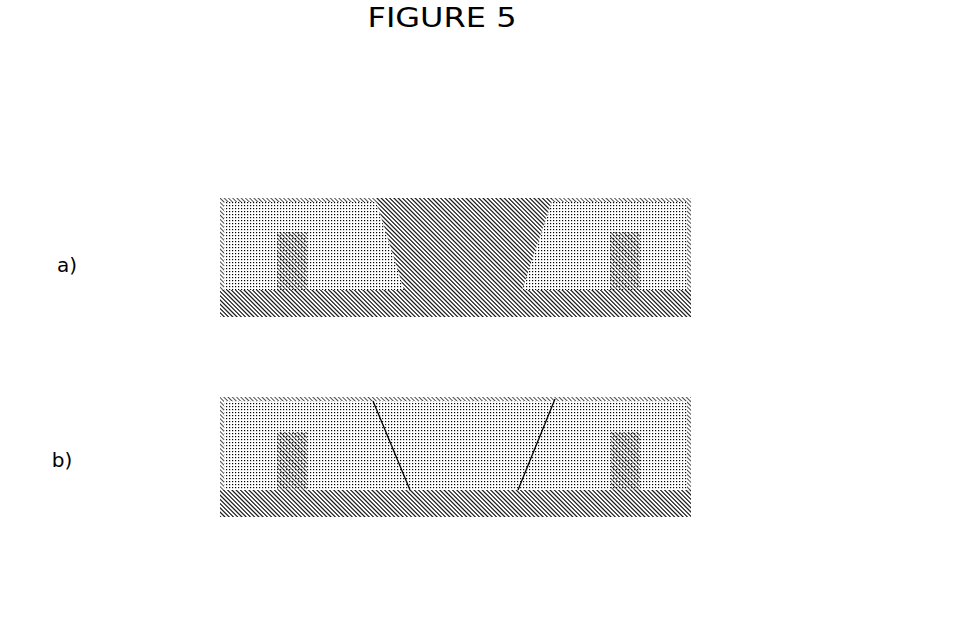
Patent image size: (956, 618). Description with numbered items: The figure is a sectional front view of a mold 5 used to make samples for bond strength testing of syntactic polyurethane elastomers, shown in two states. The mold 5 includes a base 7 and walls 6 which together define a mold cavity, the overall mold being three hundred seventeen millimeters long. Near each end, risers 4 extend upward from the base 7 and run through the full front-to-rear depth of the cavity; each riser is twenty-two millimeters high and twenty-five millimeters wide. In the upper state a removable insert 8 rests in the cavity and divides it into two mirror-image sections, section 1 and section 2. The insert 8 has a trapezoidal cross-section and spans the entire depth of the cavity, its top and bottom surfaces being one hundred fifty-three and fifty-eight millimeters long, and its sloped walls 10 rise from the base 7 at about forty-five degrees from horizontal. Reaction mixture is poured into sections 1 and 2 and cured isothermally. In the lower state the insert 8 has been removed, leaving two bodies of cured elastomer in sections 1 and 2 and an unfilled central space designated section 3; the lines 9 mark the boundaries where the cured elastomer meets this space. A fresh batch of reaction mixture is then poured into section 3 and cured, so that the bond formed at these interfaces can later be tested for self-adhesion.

The section 1 is at (337, 220).
The section 2 is at (590, 217).
The section 3 is at (453, 457).
The risers 4 is at (293, 233).
The mold 5 is at (190, 210).
The walls 6 is at (220, 257).
The base 7 is at (253, 313).
The removable insert 8 is at (494, 228).
The interface 9 is at (393, 458).
The walls 10 is at (395, 240).